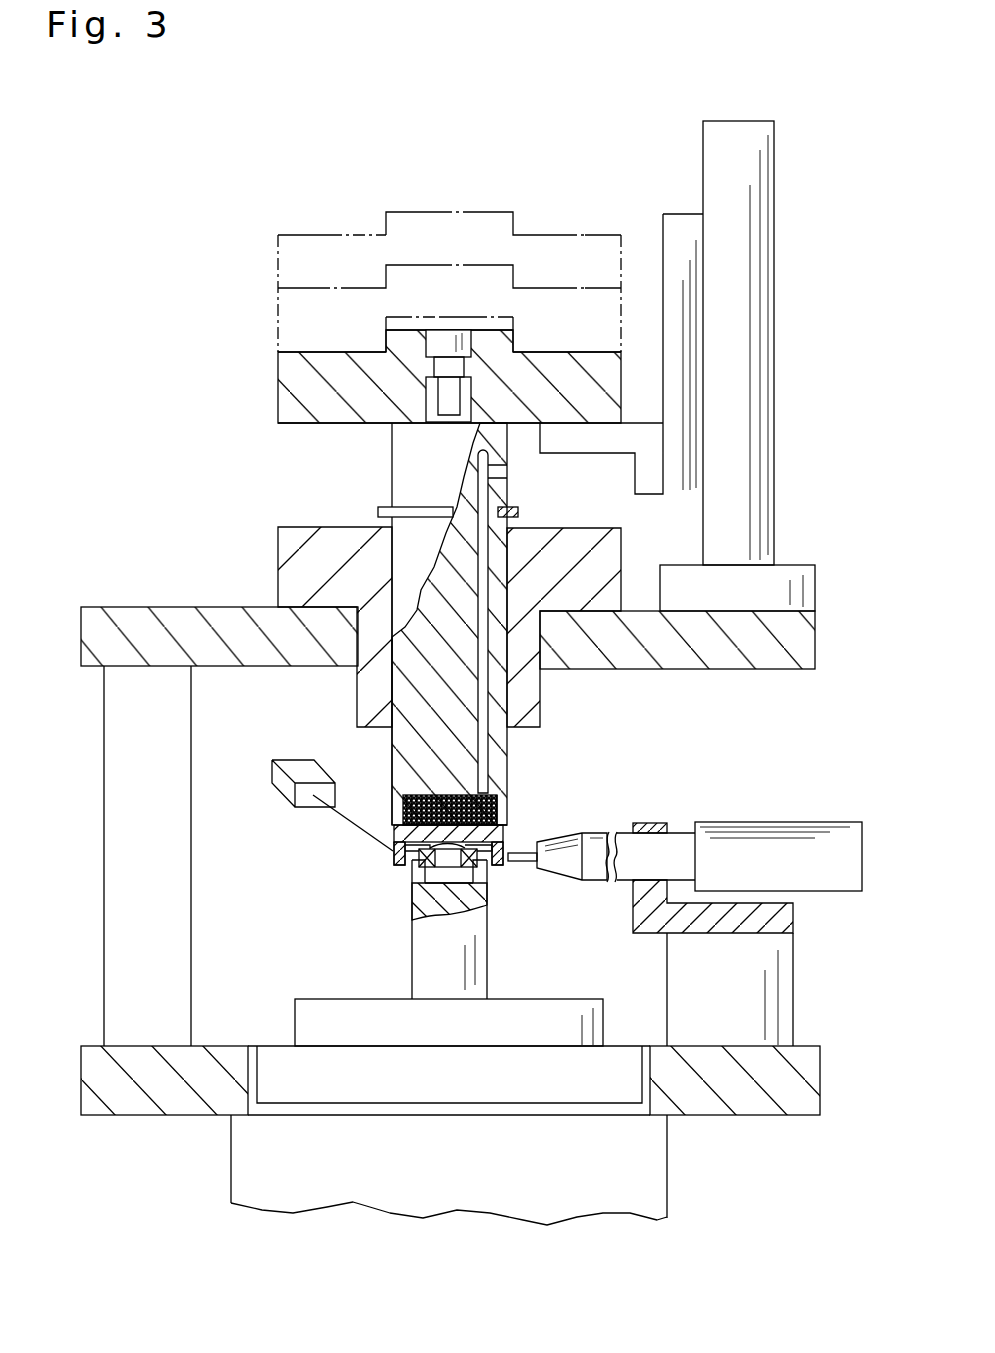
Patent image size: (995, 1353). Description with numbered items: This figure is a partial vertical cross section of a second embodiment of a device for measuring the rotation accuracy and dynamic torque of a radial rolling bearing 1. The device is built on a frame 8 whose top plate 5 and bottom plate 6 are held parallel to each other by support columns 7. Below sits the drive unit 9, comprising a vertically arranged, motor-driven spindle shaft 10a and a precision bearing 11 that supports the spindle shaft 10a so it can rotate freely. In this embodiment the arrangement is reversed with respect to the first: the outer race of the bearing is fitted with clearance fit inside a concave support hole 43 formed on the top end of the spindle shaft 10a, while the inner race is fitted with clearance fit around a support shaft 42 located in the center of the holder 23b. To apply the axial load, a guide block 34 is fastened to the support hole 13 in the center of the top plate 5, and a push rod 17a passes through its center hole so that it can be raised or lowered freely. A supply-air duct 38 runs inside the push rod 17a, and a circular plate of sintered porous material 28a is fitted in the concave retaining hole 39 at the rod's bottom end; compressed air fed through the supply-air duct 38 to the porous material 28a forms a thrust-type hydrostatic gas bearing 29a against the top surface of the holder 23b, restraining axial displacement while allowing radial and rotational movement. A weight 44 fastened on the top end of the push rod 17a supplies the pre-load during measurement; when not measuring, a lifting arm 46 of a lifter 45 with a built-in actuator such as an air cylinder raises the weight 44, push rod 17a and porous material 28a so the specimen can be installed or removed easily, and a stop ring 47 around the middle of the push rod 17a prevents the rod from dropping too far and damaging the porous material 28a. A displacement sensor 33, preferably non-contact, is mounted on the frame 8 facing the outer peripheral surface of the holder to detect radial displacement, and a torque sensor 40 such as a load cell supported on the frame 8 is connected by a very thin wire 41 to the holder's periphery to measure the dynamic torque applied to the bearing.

The radial rolling bearing 1 is at (455, 865).
The top plate 5 is at (735, 662).
The bottom plate 6 is at (708, 1112).
The support column 7 is at (175, 772).
The frame 8 is at (224, 802).
The drive unit 9 is at (527, 1195).
The spindle shaft 10a is at (478, 938).
The precision bearing 11 is at (247, 1153).
The support hole 13 is at (364, 614).
The push rod 17a is at (413, 553).
The holder 23b is at (497, 838).
The porous material 28a is at (437, 792).
The hydrostatic gas bearing 29a is at (497, 805).
The displacement sensor 33 is at (553, 863).
The guide block 34 is at (292, 548).
The supply-air duct 38 is at (500, 572).
The retaining hole 39 is at (495, 795).
The torque sensor 40 is at (290, 792).
The wire 41 is at (332, 848).
The support shaft 42 is at (440, 885).
The support hole 43 is at (422, 866).
The weight 44 is at (290, 375).
The lifter 45 is at (760, 338).
The lifting arm 46 is at (650, 437).
The stop ring 47 is at (415, 512).